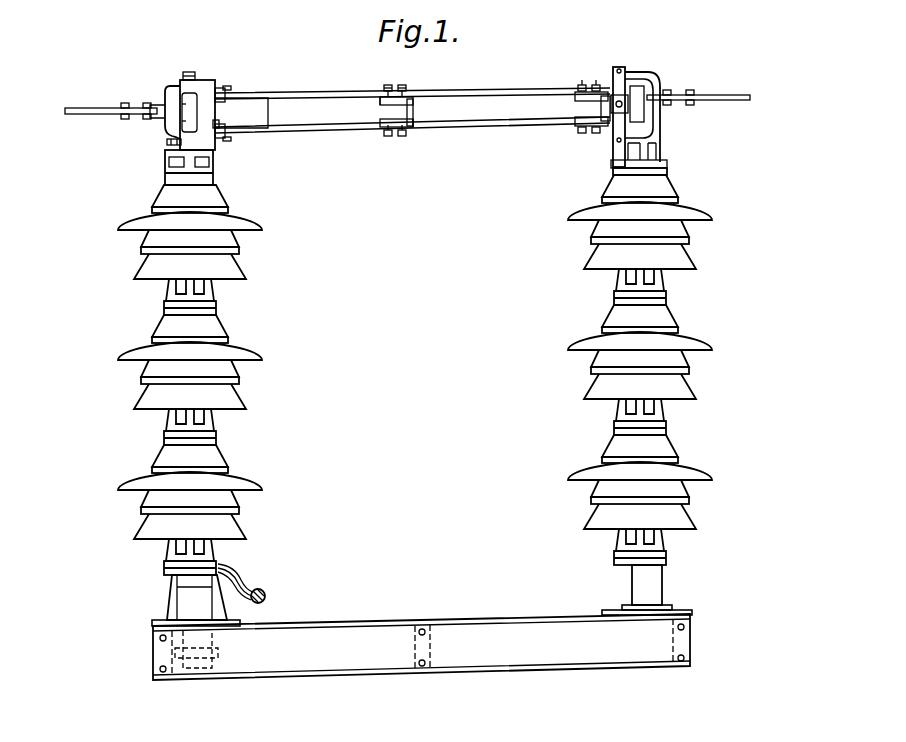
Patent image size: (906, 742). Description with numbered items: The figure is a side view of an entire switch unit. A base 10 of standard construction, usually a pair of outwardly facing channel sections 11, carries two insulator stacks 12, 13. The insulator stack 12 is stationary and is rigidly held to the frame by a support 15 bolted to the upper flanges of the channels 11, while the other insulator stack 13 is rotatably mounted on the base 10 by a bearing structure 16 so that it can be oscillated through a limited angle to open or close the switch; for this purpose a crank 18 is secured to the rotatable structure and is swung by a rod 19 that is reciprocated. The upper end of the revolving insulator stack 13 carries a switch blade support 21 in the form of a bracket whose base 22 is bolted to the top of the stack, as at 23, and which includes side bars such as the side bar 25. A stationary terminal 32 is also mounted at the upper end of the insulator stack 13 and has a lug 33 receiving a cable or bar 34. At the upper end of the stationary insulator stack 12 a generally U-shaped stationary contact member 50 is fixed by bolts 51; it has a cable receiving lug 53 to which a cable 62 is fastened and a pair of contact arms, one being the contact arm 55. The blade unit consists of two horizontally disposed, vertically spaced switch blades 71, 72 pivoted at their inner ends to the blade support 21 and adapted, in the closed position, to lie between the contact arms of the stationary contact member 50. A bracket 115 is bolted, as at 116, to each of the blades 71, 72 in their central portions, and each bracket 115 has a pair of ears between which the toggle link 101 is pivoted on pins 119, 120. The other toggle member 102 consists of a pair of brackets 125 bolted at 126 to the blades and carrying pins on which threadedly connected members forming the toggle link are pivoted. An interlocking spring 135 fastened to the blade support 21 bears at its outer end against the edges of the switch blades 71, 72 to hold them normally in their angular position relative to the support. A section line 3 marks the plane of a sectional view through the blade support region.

The section line 3- 3 is at (205, 44).
The base 10 is at (458, 615).
The channel sections 11 is at (510, 660).
The insulator stack 12 is at (562, 318).
The insulator stack 13 is at (286, 345).
The support 15 is at (654, 577).
The bearing structure 16 is at (185, 590).
The crank 18 is at (240, 576).
The rod 19 is at (266, 597).
The switch blade support 21 is at (219, 84).
The base 22 is at (162, 158).
The bolt fastening 23 is at (165, 142).
The side bar 25 is at (217, 128).
The stationary terminal 32 is at (181, 91).
The lug 33 is at (140, 112).
The cable or bar 34 is at (86, 108).
The stationary contact member 50 is at (658, 80).
The bolts 51 is at (612, 163).
The cable receiving lug 53 is at (699, 103).
The contact arm 55 is at (633, 73).
The cable 62 is at (735, 95).
The switch blade 71 is at (490, 91).
The switch blade 72 is at (490, 131).
The toggle link 101 is at (415, 108).
The toggle member 102 is at (601, 107).
The bracket 115 is at (382, 100).
The bolts 116 is at (402, 84).
The pin 119 is at (412, 96).
The pin 120 is at (414, 125).
The brackets 125 is at (580, 97).
The bolts 126 is at (596, 80).
The interlocking spring 135 is at (259, 106).